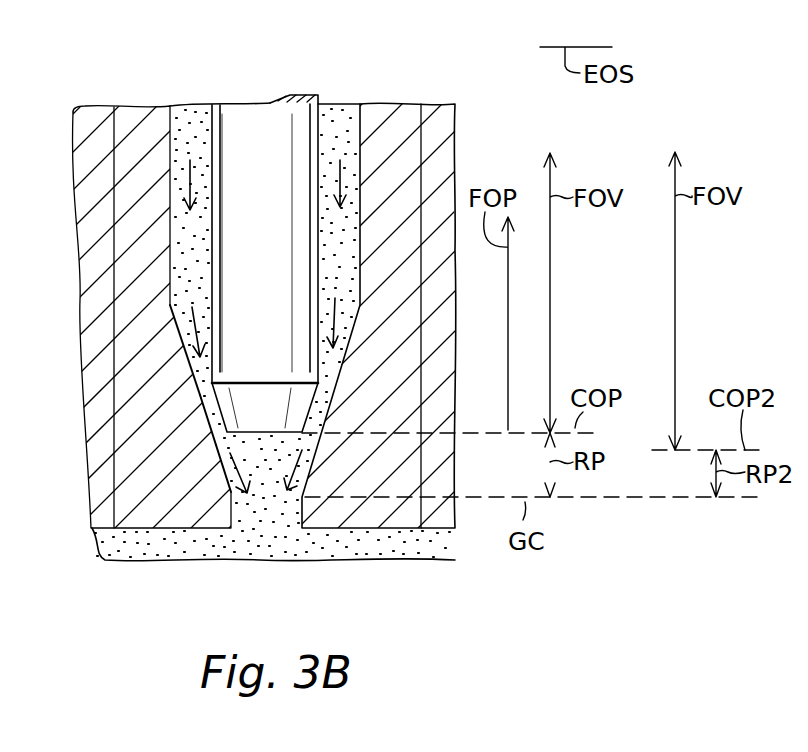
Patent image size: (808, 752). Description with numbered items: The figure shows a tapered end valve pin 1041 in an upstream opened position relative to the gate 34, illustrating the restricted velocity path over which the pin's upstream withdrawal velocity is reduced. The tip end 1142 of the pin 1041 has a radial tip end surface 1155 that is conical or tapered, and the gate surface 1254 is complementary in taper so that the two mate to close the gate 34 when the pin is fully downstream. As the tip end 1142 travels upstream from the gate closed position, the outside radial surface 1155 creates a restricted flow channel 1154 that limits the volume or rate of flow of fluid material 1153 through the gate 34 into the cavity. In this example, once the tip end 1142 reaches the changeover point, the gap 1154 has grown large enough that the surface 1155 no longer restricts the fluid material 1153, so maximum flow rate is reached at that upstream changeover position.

The valve pin 1041 is at (290, 102).
The fluid material 1153 is at (342, 172).
The radial tip end surface 1155 is at (207, 413).
The gate surface 1254 is at (214, 452).
The restricted flow channel 1154 is at (213, 448).
The gate 34 is at (267, 530).
The tip end 1142 is at (300, 433).